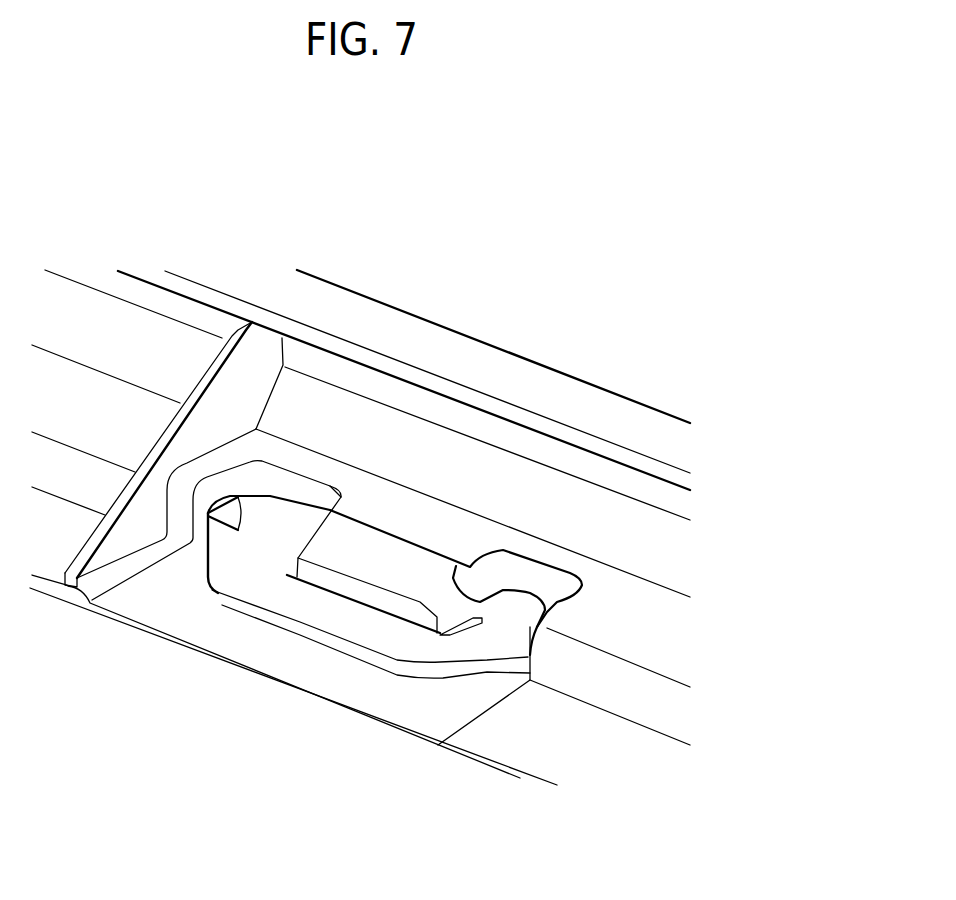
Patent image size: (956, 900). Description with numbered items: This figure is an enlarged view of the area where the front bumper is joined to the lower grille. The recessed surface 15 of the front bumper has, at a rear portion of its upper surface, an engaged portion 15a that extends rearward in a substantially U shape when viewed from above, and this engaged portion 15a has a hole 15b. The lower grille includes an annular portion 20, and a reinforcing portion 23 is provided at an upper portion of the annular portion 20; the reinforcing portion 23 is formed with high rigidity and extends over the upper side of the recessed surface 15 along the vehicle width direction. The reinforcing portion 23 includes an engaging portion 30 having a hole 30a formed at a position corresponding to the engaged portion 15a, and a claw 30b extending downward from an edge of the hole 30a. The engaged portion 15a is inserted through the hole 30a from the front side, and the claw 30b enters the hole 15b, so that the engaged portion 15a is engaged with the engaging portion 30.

The recessed surface 15 is at (330, 607).
The engaged portion 15a is at (330, 607).
The hole 15b is at (205, 560).
The annular portion 20 is at (417, 707).
The reinforcing portion 23 is at (475, 367).
The engaging portion 30 is at (413, 558).
The hole 30a is at (305, 508).
The claw 30b is at (367, 547).